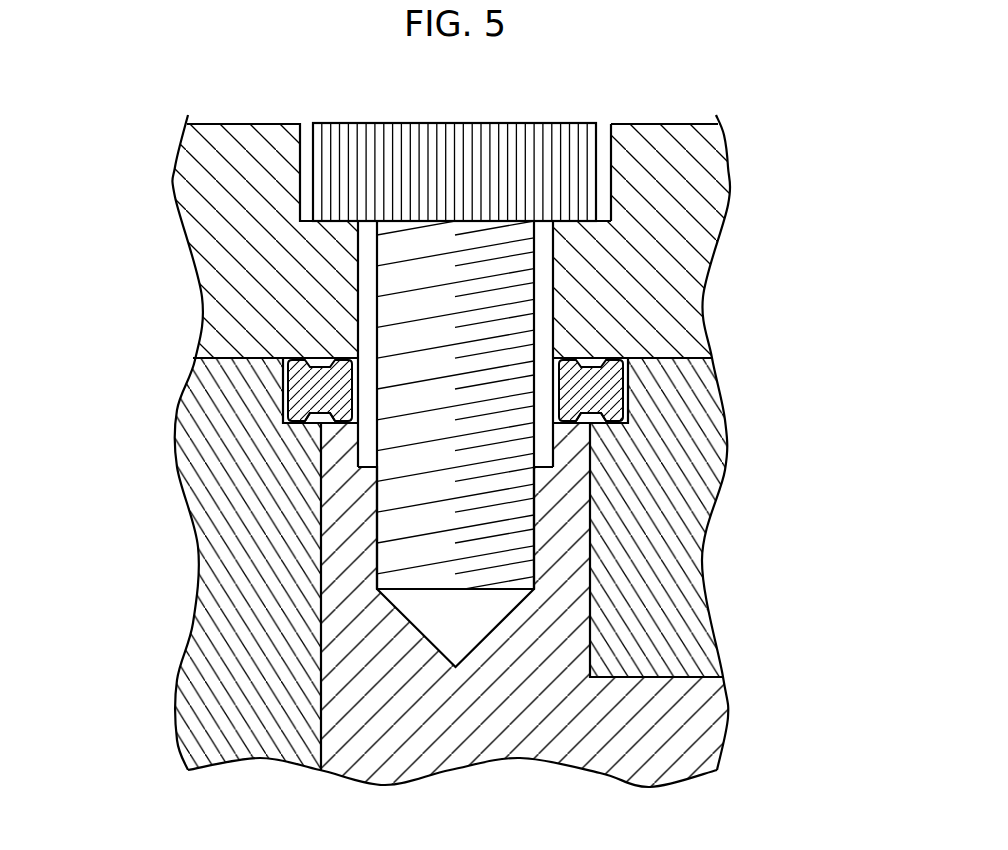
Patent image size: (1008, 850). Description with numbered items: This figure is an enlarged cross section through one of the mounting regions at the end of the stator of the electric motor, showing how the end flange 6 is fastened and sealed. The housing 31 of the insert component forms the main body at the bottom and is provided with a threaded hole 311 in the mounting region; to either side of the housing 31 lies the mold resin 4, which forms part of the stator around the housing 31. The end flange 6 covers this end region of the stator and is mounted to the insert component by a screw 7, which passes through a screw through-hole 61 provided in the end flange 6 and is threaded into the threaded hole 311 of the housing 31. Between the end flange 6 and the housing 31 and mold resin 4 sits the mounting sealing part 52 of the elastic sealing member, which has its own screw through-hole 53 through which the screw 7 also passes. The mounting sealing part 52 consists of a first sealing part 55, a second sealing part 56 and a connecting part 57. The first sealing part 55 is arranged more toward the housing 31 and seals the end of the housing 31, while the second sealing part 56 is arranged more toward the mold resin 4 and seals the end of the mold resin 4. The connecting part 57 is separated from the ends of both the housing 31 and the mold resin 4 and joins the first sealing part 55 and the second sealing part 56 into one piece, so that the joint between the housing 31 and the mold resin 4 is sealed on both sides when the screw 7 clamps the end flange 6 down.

The screw 7 is at (406, 135).
The end flange 6 is at (660, 130).
The screw through-hole 61 is at (552, 270).
The screw through-hole 53 is at (552, 370).
The mold resin 4 is at (190, 392).
The mounting sealing part 52 is at (123, 425).
The second sealing part 56 is at (312, 415).
The connecting part 57 is at (322, 423).
The first sealing part 55 is at (345, 426).
The threaded hole 311 is at (526, 572).
The housing 31 is at (690, 742).